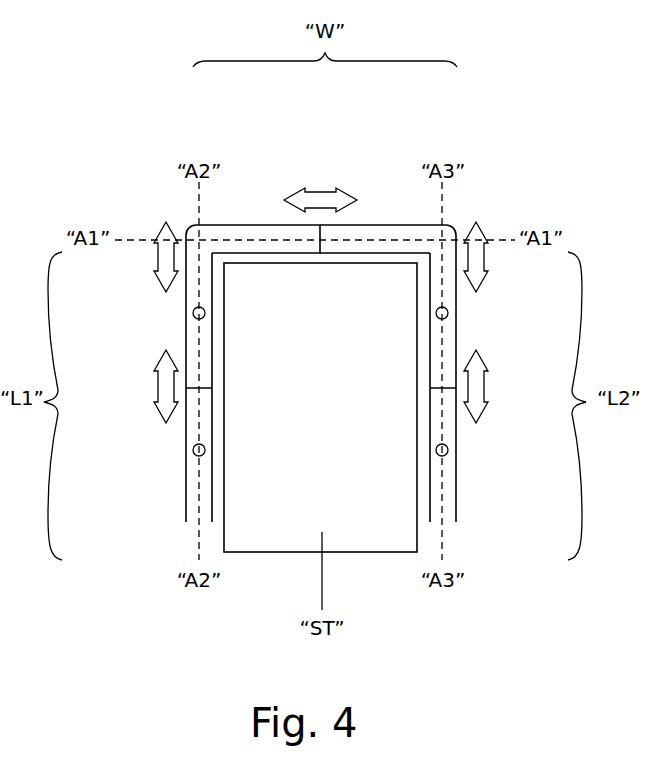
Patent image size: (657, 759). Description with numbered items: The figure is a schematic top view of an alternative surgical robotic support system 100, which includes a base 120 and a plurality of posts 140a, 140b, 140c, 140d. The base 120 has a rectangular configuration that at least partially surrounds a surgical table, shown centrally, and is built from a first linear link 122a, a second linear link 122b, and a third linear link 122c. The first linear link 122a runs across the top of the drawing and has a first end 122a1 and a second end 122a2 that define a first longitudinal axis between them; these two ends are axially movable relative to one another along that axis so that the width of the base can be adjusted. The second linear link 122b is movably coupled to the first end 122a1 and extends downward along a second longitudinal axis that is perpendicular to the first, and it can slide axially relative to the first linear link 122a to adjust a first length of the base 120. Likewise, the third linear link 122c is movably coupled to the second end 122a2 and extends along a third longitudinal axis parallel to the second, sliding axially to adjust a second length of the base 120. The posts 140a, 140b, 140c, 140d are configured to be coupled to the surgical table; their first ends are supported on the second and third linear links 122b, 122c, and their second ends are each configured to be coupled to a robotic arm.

The surgical robotic support system 100 is at (182, 215).
The base 120 is at (452, 217).
The first linear link 122a is at (376, 224).
The first end of first linear link 122a1 is at (263, 225).
The second end of first linear link 122a2 is at (407, 225).
The second linear link 122b is at (185, 487).
The third linear link 122c is at (457, 487).
The post 140a is at (193, 313).
The post 140b is at (448, 313).
The post 140c is at (193, 450).
The post 140d is at (448, 450).